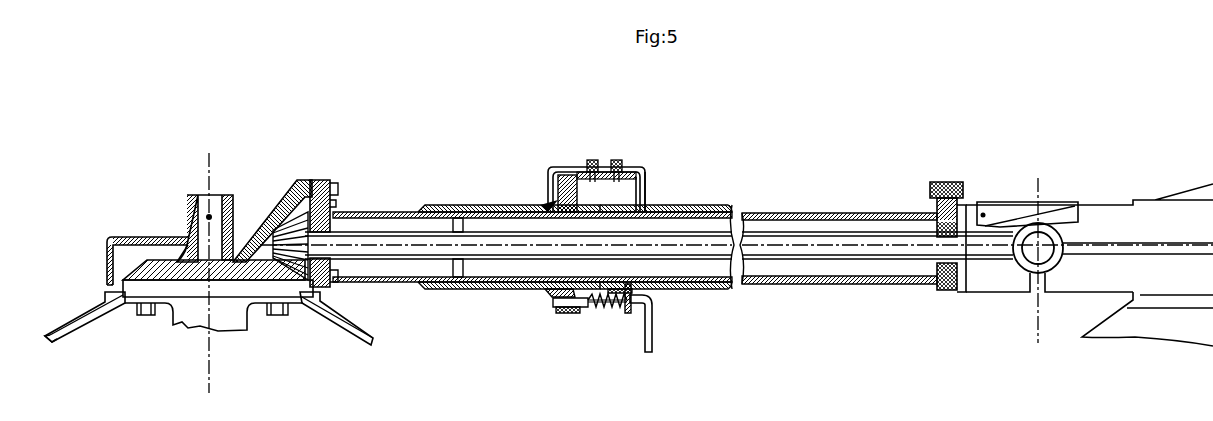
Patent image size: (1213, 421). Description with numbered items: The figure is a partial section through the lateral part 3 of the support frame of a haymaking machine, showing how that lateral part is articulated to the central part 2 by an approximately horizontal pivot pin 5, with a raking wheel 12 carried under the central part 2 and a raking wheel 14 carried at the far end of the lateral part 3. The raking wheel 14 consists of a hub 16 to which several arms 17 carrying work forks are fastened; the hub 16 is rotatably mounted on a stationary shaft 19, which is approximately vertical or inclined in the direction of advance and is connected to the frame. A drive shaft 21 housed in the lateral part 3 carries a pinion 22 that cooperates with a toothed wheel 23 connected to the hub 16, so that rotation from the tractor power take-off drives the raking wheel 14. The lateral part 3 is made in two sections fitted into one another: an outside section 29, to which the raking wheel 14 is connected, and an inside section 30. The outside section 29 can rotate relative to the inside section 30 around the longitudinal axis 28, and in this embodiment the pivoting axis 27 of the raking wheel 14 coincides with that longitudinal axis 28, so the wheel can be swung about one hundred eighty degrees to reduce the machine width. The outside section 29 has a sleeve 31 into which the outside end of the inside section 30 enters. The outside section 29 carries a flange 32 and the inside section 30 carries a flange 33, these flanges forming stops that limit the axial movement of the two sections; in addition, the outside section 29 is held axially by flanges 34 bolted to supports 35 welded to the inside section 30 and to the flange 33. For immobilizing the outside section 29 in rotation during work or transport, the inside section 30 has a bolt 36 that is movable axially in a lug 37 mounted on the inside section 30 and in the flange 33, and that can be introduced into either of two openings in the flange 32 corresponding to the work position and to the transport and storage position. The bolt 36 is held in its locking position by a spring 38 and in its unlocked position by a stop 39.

The central part 2 is at (1107, 201).
The lateral part 3 is at (833, 210).
The pivot pin 5 is at (1030, 258).
The raking wheel 12 is at (1121, 340).
The raking wheel 14 is at (98, 300).
The hub 16 is at (187, 307).
The arm 17 is at (62, 334).
The stationary shaft 19 is at (200, 206).
The drive shaft 21 is at (401, 252).
The pinion 22 is at (295, 210).
The toothed wheel 23 is at (165, 261).
The pivoting axis 27 is at (508, 247).
The longitudinal axis 28 is at (850, 247).
The outside section 29 is at (378, 210).
The inside section 30 is at (715, 211).
The sleeve 31 is at (462, 208).
The flange 32 is at (553, 197).
The flange 33 is at (582, 196).
The flange 34 is at (572, 176).
The support 35 is at (643, 177).
The bolt 36 is at (648, 328).
The lug 37 is at (627, 315).
The spring 38 is at (642, 292).
The stop 39 is at (580, 312).